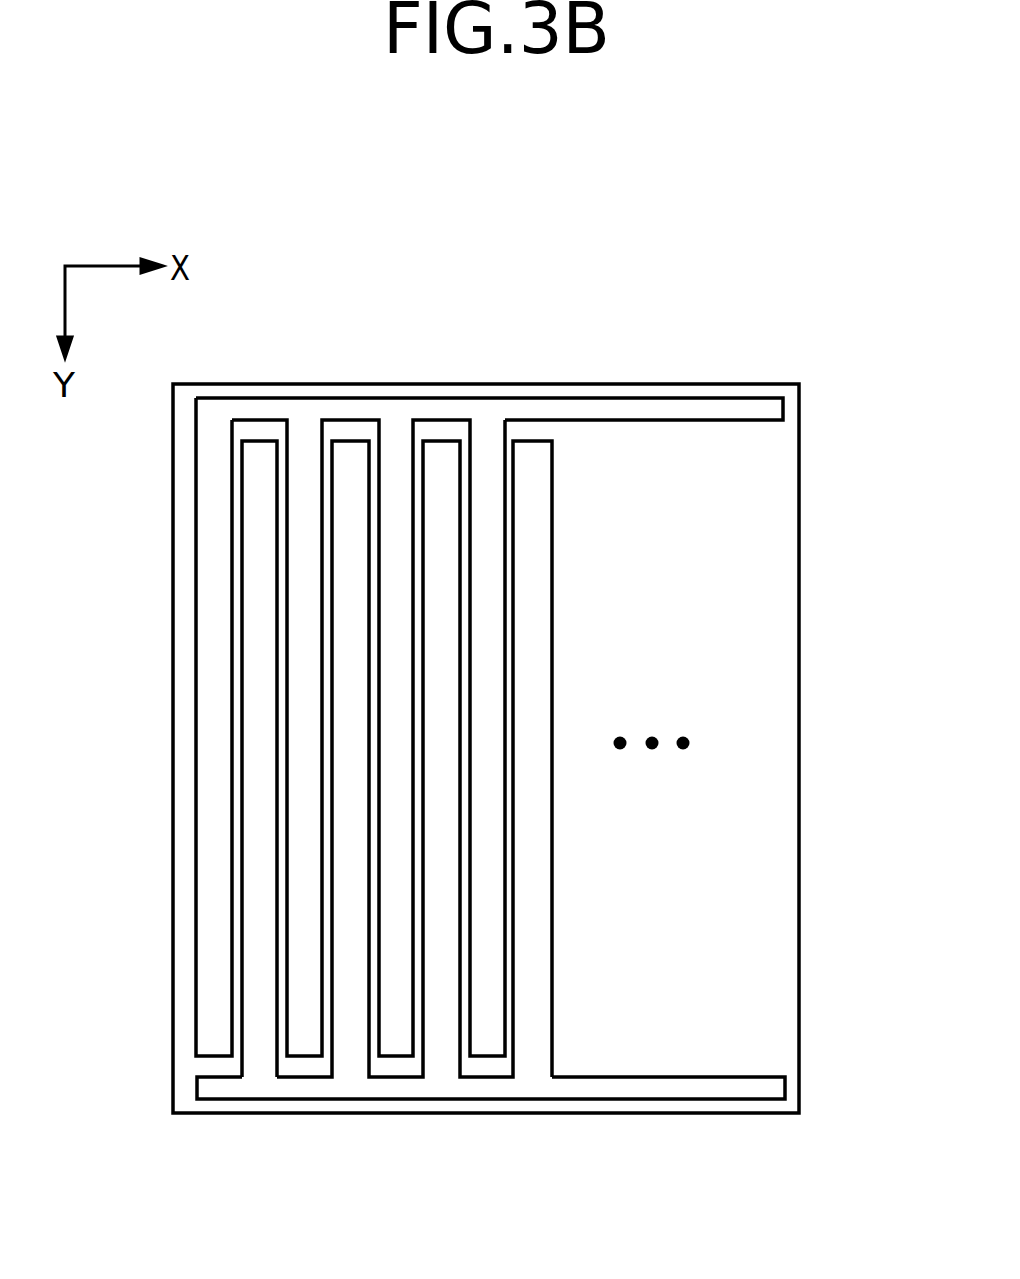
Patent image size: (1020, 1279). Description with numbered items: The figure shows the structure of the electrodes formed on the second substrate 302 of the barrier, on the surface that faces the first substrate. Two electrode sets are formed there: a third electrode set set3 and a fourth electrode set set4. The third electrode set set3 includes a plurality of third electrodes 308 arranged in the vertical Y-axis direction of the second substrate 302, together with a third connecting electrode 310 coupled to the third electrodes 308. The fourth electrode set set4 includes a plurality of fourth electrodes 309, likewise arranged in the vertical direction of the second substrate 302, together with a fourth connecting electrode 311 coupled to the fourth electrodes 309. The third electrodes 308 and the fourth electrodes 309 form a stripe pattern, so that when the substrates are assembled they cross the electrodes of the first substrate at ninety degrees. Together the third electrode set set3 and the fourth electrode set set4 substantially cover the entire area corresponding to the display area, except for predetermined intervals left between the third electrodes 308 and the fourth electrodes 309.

The second substrate 302 is at (544, 674).
The third electrodes 308 is at (217, 773).
The fourth electrodes 309 is at (268, 997).
The third connecting electrode 310 is at (686, 410).
The fourth connecting electrode 311 is at (647, 1090).
The third electrode set set3 is at (425, 675).
The fourth electrode set set4 is at (430, 823).